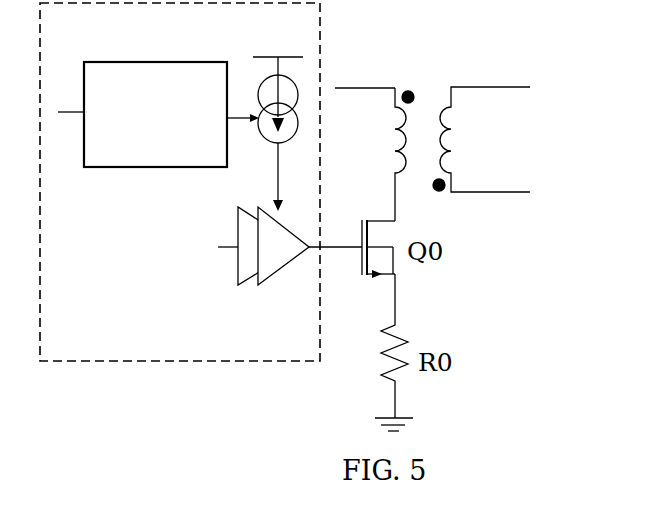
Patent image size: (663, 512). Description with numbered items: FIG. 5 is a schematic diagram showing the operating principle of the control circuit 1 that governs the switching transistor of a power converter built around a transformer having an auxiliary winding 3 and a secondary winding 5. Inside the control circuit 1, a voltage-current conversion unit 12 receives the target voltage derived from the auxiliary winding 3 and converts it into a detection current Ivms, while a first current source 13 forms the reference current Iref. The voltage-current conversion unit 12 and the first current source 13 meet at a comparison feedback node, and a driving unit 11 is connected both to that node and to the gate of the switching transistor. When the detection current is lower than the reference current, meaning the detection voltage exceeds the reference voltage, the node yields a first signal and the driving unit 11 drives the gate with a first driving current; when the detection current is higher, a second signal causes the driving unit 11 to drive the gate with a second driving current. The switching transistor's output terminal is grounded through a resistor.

The control circuit 1 is at (321, 38).
The voltage-current conversion unit 12 is at (127, 62).
The first current source 13 is at (265, 145).
The driving unit 11 is at (258, 286).
The auxiliary winding 3 is at (405, 90).
The secondary winding 5 is at (443, 199).